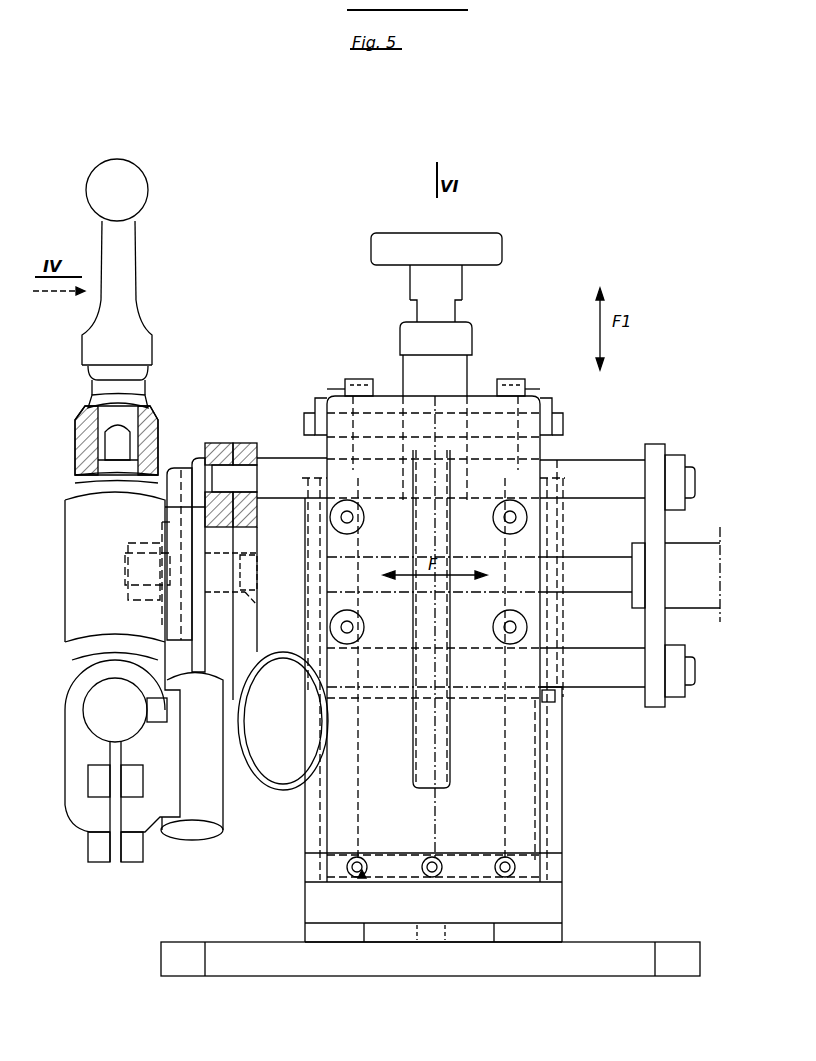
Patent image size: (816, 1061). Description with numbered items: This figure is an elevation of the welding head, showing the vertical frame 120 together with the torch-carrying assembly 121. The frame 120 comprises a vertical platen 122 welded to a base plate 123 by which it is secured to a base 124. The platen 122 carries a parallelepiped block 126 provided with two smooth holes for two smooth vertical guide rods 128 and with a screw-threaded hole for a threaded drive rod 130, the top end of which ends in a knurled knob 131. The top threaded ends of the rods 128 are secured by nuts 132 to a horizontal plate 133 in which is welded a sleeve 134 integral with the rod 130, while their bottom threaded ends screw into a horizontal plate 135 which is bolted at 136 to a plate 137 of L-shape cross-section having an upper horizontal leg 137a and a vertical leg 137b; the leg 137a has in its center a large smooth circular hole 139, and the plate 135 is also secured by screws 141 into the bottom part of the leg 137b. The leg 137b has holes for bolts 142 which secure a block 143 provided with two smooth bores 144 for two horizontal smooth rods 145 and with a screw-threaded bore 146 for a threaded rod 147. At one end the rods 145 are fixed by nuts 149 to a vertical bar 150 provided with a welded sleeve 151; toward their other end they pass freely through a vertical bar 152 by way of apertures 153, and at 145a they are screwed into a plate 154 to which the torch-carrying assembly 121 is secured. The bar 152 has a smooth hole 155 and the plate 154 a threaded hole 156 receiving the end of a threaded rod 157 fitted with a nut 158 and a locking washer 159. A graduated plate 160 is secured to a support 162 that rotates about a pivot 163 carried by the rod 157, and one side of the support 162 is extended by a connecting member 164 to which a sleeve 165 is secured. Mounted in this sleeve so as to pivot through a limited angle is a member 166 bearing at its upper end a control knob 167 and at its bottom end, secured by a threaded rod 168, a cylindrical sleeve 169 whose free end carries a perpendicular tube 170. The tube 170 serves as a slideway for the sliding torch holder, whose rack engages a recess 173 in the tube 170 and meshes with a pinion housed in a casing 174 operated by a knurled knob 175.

The vertical frame 120 is at (345, 335).
The torch-carrying assembly 121 is at (187, 366).
The vertical platen 122 is at (557, 707).
The base plate 123 is at (548, 929).
The base 124 is at (622, 957).
The parallelepiped block 126 is at (560, 690).
The smooth vertical guide rods 128 is at (362, 803).
The threaded drive rod 130 is at (452, 740).
The knurled knob 131 is at (408, 250).
The nuts 132 is at (318, 398).
The horizontal plate 133 is at (556, 427).
The sleeve 134 is at (440, 365).
The horizontal plate 135 is at (476, 850).
The bolts 136 is at (361, 380).
The plate of L-shape cross-section 137 is at (475, 392).
The upper horizontal leg 137a is at (418, 408).
The vertical leg 137b is at (520, 793).
The large smooth circular hole 139 is at (402, 409).
The screws 141 is at (358, 875).
The bolts 142 is at (568, 518).
The block 143 is at (500, 445).
The smooth bores 144 is at (480, 500).
The horizontal smooth rods 145 is at (582, 472).
The threaded ends of rods 145a is at (234, 478).
The screw-threaded bore 146 is at (385, 598).
The threaded rod 147 is at (575, 577).
The nuts 149 is at (680, 463).
The vertical bar 150 is at (660, 626).
The welded sleeve 151 is at (679, 556).
The vertical bar 152 is at (240, 443).
The apertures 153 is at (262, 465).
The plate 154 is at (224, 443).
The smooth hole 155 is at (258, 557).
The threaded hole 156 is at (255, 598).
The threaded rod 157 is at (206, 556).
The nut 158 is at (128, 576).
The locking washer 159 is at (183, 613).
The graduated plate 160 is at (206, 440).
The support 162 is at (184, 455).
The pivot 163 is at (165, 636).
The connecting member 164 is at (182, 515).
The sleeve 165 is at (82, 529).
The member 166 is at (80, 455).
The control knob 167 is at (108, 336).
The threaded rod 168 is at (112, 445).
The cylindrical sleeve 169 is at (86, 668).
The perpendicular tube 170 is at (80, 733).
The recess 173 is at (165, 726).
The casing 174 is at (198, 799).
The knurled knob 175 is at (283, 721).